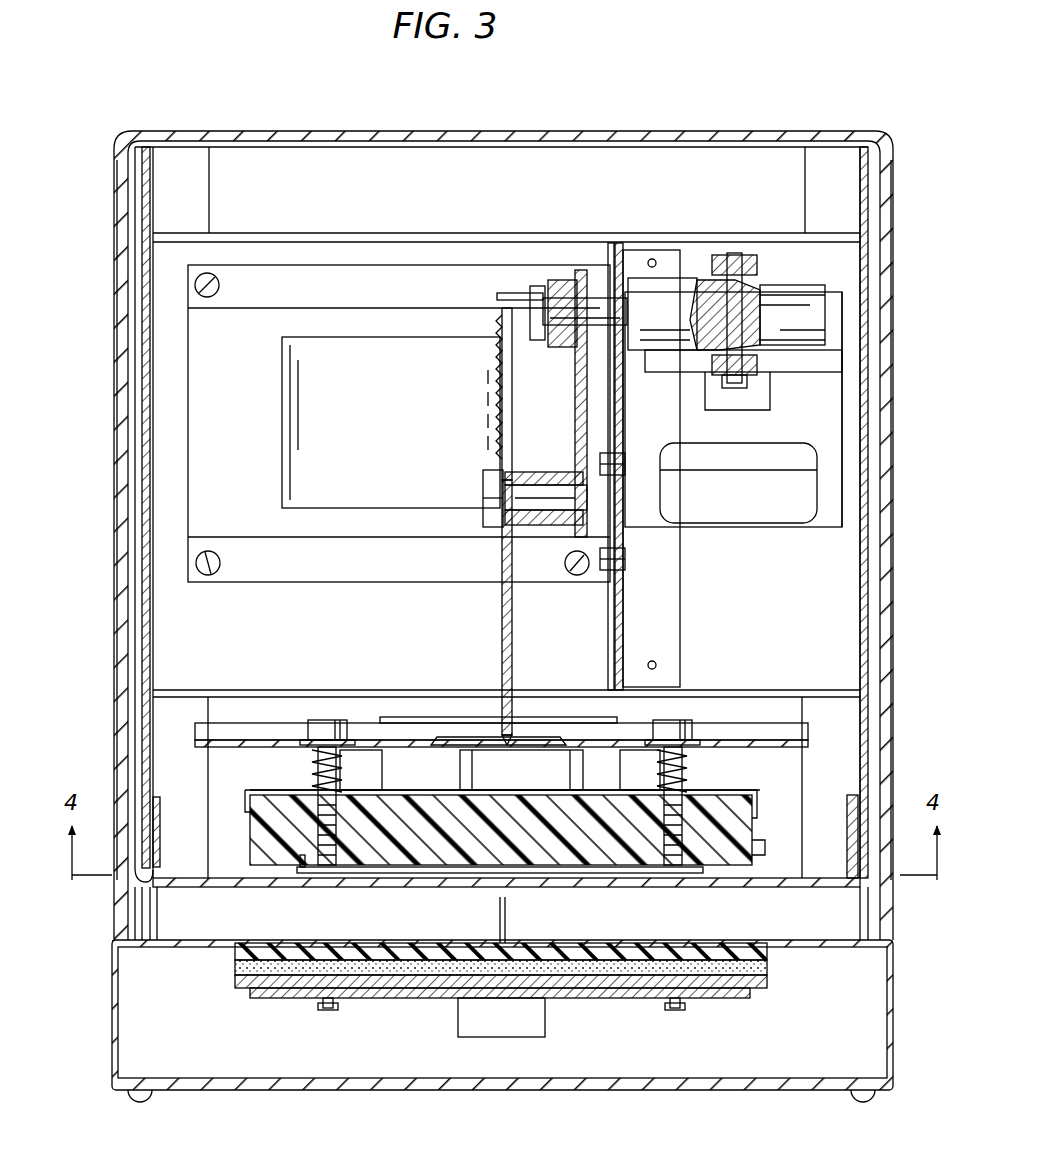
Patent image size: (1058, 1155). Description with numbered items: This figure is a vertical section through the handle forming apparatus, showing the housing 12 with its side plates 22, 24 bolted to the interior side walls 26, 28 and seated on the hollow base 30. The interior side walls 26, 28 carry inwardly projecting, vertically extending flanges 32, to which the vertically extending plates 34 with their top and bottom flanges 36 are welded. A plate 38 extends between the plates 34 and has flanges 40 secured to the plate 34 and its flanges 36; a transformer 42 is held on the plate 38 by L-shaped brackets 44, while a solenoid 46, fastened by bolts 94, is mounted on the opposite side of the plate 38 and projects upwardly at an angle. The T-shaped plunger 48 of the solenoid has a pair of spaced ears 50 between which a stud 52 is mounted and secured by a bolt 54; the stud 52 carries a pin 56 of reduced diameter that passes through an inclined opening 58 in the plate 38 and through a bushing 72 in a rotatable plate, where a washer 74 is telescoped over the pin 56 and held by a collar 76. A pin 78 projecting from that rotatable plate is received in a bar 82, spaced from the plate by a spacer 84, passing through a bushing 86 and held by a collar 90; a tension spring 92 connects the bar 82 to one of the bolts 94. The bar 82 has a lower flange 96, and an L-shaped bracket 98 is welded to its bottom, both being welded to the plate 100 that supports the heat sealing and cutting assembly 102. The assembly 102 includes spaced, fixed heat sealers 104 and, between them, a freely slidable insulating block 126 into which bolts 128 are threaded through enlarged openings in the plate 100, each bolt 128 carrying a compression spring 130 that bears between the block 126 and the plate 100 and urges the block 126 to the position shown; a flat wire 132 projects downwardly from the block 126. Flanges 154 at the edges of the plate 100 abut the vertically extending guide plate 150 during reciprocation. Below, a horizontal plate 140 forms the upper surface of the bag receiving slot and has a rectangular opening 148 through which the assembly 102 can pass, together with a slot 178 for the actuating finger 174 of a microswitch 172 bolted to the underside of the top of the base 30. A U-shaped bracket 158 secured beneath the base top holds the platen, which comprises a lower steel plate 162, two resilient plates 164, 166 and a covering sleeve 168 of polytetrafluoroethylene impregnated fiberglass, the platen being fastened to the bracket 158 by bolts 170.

The housing 12 is at (682, 129).
The side plate 22 is at (121, 426).
The side plate 24 is at (893, 442).
The interior side wall 26 is at (136, 380).
The interior side wall 28 is at (860, 622).
The hollow base 30 is at (112, 1031).
The flange 32 is at (210, 193).
The vertically extending plate 34 is at (745, 580).
The top and bottom flange 36 is at (373, 233).
The plate 38 is at (621, 646).
The flange 40 is at (640, 250).
The transformer 42 is at (391, 422).
The L-shaped bracket 44 is at (399, 423).
The solenoid 46 is at (733, 409).
The T-shaped plunger 48 is at (862, 266).
The spaced ear 50 is at (757, 268).
The stud 52 is at (726, 314).
The bolt 54 is at (726, 262).
The pin 56 is at (578, 345).
The opening 58 is at (611, 275).
The bushing 72 is at (502, 352).
The washer 74 is at (548, 292).
The collar 76 is at (530, 322).
The pin 78 is at (550, 505).
The bar 82 is at (512, 648).
The spacer 84 is at (578, 440).
The bushing 86 is at (535, 484).
The collar 90 is at (483, 478).
The tension spring 92 is at (500, 408).
The bolt 94 is at (497, 296).
The lower flange 96 is at (521, 717).
The L-shaped bracket 98 is at (502, 690).
The plate 100 is at (248, 748).
The heat sealing and cutting assembly 102 is at (738, 785).
The heat sealer 104 is at (766, 800).
The block 126 is at (762, 838).
The bolt 128 is at (310, 720).
The compression spring 130 is at (312, 766).
The flat wire 132 is at (700, 866).
The horizontal plate 140 is at (816, 888).
The rectangular opening 148 is at (636, 875).
The vertically extending plate 150 is at (576, 712).
The flange 154 is at (808, 738).
The U-shaped bracket 158 is at (736, 999).
The lower steel plate 162 is at (768, 992).
The resilient plate 164 is at (770, 980).
The resilient plate 166 is at (770, 964).
The sleeve 168 is at (666, 946).
The bolt 170 is at (331, 1010).
The microswitch 172 is at (545, 1018).
The actuating finger 174 is at (506, 924).
The slot 178 is at (490, 887).